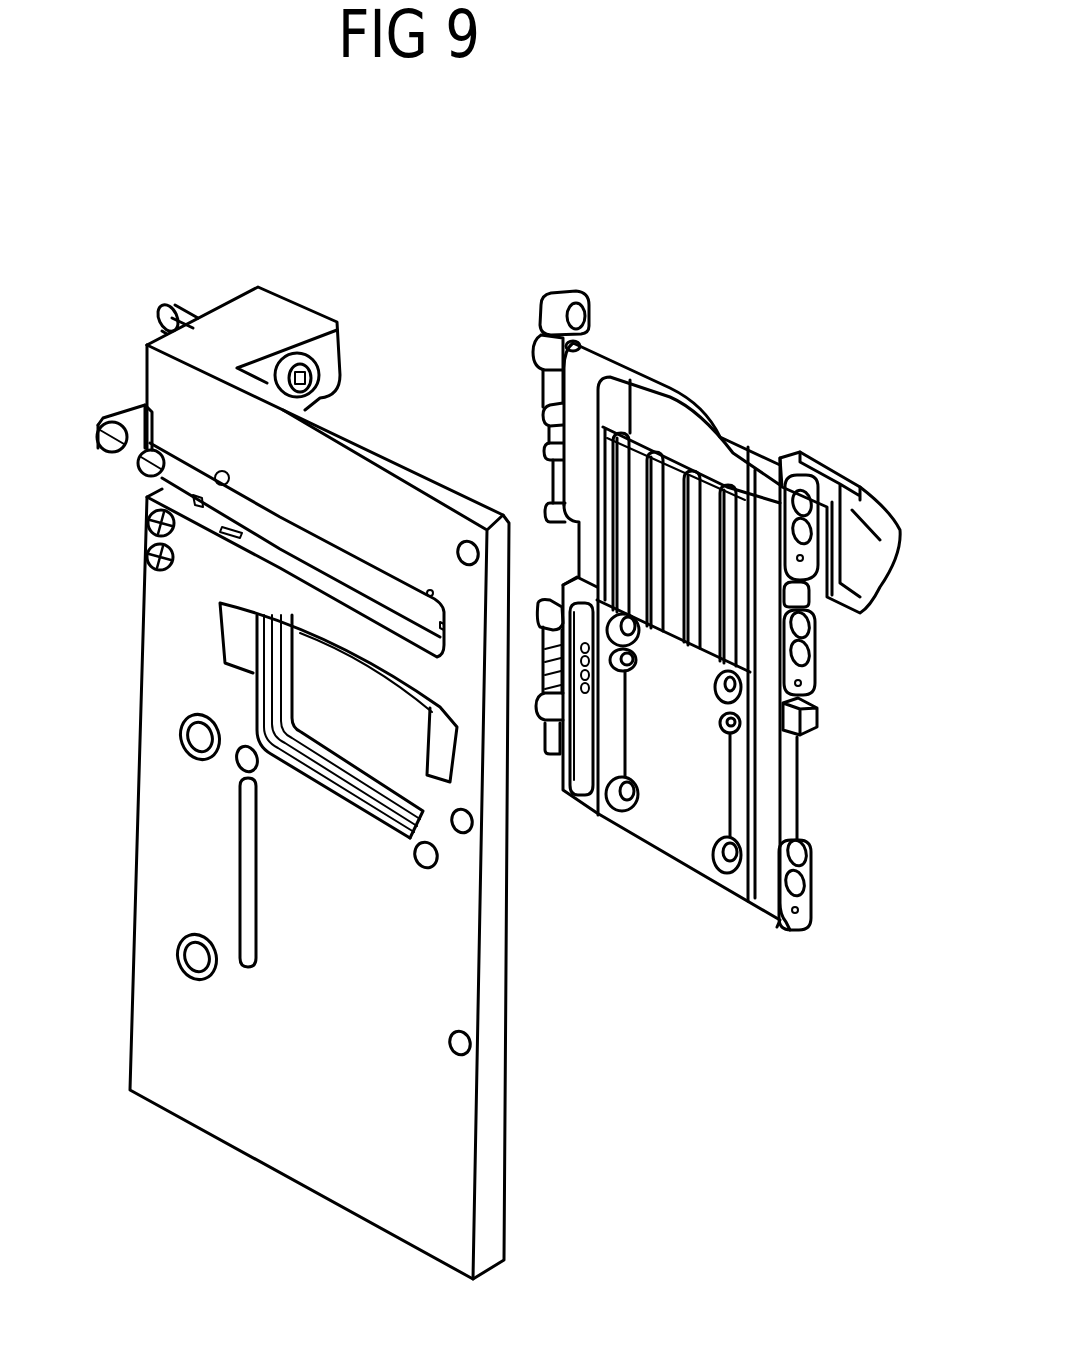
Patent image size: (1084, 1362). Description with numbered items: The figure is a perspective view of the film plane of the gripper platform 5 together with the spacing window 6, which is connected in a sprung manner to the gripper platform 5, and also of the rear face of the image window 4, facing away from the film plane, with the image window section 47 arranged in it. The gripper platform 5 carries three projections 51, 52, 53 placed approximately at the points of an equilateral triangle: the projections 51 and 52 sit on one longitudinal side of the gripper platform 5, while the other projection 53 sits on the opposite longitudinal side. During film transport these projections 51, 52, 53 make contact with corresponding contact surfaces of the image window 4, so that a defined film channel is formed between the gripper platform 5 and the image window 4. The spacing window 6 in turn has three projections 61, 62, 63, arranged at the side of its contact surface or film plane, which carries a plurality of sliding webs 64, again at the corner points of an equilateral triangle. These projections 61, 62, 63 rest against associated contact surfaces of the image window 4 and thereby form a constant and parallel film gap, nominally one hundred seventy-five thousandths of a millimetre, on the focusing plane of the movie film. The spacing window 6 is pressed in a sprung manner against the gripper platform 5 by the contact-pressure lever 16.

The image window 4 is at (173, 863).
The image window section 47 is at (323, 723).
The gripper platform 5 is at (687, 843).
The spacing window 6 is at (645, 440).
The sliding webs 64 is at (695, 482).
The contact-pressure lever 16 is at (863, 507).
The projection 63 is at (810, 605).
The projection 53 is at (805, 735).
The projection 52 is at (550, 755).
The projection 61 is at (548, 395).
The projection 51 is at (550, 447).
The projection 62 is at (553, 505).